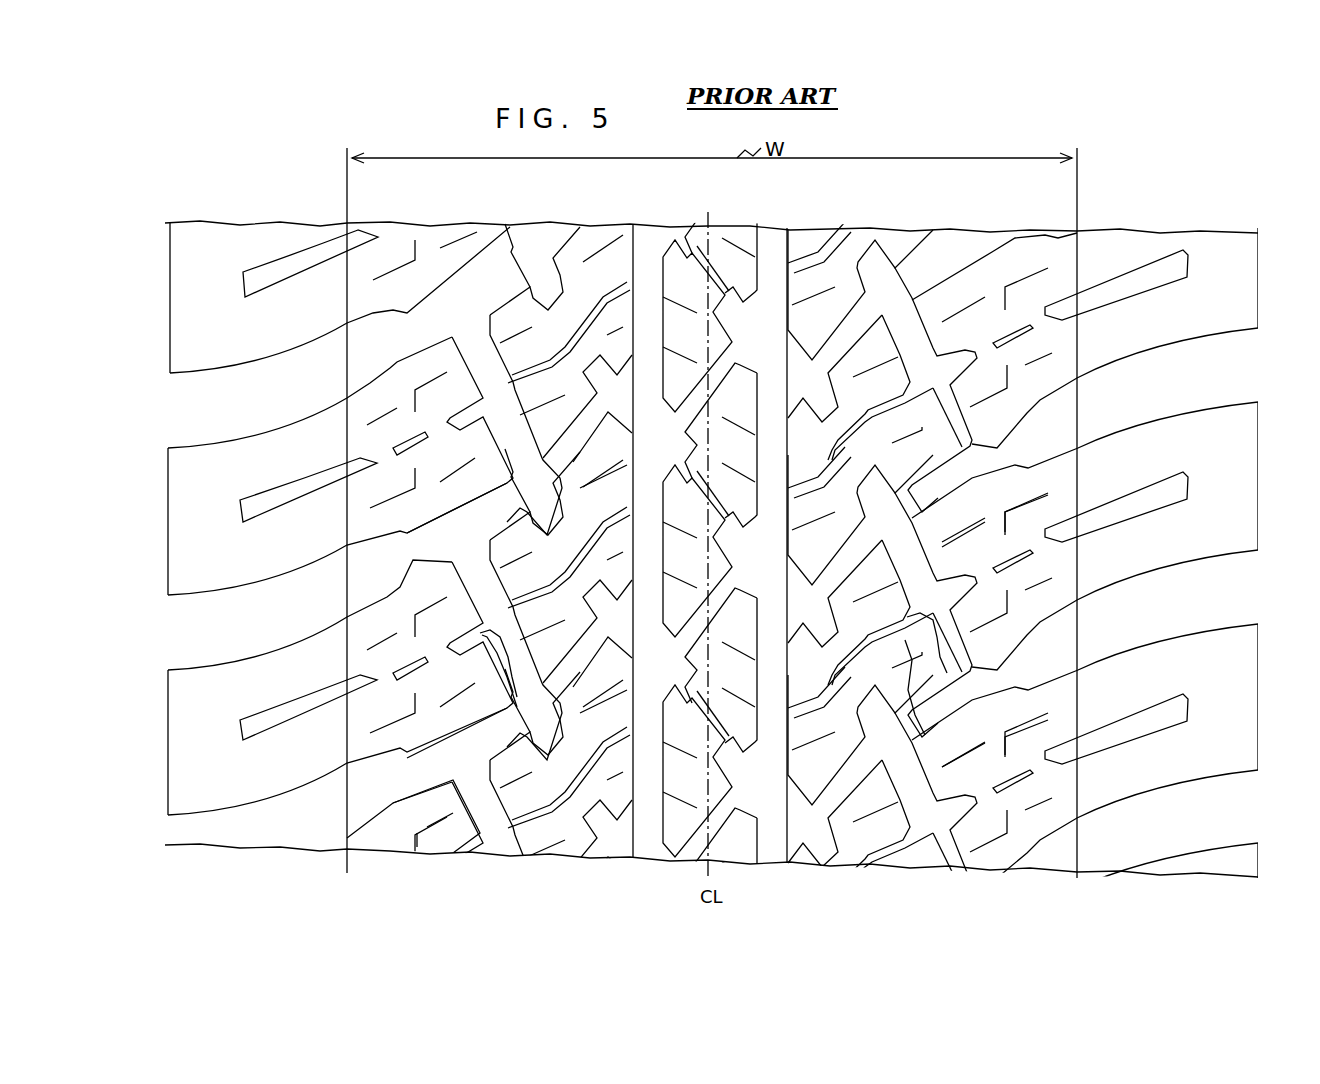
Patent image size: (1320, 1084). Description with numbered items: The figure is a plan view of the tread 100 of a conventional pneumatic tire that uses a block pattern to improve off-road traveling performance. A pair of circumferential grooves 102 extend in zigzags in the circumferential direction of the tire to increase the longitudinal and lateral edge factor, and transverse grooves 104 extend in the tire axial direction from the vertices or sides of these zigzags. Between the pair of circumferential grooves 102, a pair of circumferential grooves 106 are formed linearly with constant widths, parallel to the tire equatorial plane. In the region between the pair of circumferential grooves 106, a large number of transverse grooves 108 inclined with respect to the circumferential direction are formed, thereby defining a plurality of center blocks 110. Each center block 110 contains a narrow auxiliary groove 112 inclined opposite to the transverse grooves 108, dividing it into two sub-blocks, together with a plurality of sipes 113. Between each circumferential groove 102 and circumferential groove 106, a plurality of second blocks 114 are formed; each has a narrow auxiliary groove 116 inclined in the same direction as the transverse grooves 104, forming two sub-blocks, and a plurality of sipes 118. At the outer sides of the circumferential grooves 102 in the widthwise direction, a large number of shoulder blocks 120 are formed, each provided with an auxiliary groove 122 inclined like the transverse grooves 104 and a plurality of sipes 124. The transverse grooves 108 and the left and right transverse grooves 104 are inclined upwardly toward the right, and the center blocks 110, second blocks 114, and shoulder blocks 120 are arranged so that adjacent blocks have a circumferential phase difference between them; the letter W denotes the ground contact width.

The tread 100 is at (711, 209).
The circumferential grooves 102 is at (711, 845).
The transverse grooves 104 is at (713, 555).
The circumferential grooves 106 is at (678, 567).
The transverse grooves 108 is at (680, 579).
The center blocks 110 is at (732, 555).
The auxiliary groove 112 is at (700, 491).
The sipes 113 is at (706, 602).
The second blocks 114 is at (638, 602).
The auxiliary groove 116 is at (739, 555).
The sipes 118 is at (899, 604).
The shoulder blocks 120 is at (701, 828).
The auxiliary groove 122 is at (725, 768).
The sipes 124 is at (998, 781).